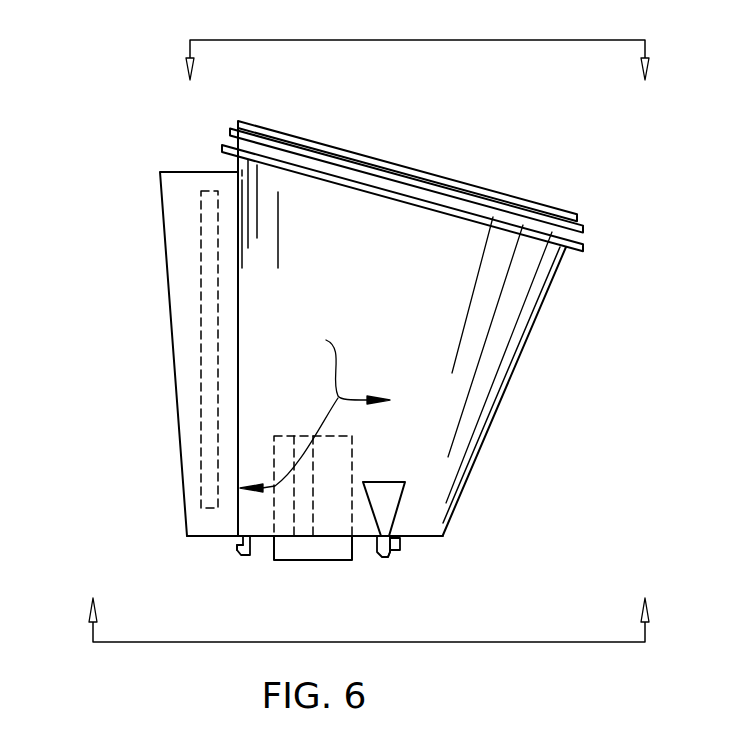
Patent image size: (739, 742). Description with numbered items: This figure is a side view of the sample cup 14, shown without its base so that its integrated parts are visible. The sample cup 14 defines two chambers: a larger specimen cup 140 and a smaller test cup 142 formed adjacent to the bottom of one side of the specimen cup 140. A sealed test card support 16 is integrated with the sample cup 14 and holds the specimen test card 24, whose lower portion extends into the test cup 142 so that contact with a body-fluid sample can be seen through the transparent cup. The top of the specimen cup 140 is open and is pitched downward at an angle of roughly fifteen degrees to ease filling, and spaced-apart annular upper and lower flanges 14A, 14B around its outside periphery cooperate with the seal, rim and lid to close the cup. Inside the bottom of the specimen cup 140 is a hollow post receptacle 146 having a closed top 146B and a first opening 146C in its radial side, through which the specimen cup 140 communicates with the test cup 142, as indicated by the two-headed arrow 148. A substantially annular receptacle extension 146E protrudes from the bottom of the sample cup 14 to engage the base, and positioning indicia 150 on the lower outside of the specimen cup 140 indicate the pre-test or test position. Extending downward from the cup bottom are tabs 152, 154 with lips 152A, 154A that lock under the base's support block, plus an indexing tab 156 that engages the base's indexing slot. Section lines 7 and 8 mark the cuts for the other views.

The section line 7- 7 is at (418, 75).
The section line 8- 8 is at (369, 606).
The sample cup 14 is at (316, 171).
The upper flange 14A is at (229, 135).
The lower flange 14B is at (221, 147).
The sealed test card support 16 is at (119, 354).
The specimen test card 24 is at (200, 282).
The specimen cup 140 is at (537, 315).
The test cup 142 is at (183, 477).
The post receptacle 146 is at (345, 510).
The closed top 146B is at (337, 437).
The first opening 146C is at (313, 463).
The receptacle extension 146E is at (303, 550).
The two-headed arrow 148 is at (315, 410).
The positioning indicia 150 is at (383, 513).
The tab 152 is at (190, 582).
The lip 152A is at (237, 548).
The tab 154 is at (429, 581).
The lip 154A is at (392, 555).
The indexing tab 156 is at (401, 547).